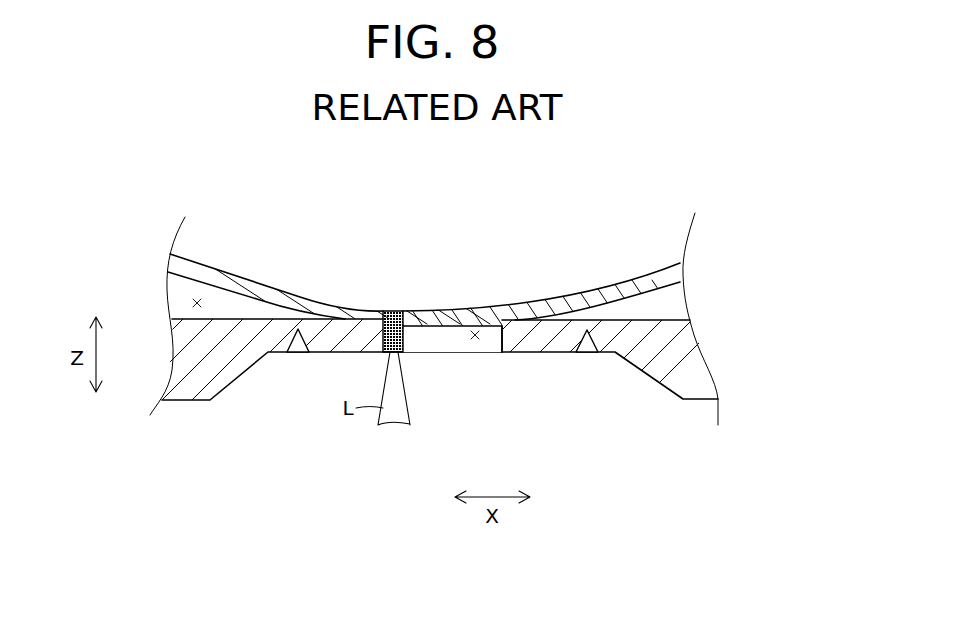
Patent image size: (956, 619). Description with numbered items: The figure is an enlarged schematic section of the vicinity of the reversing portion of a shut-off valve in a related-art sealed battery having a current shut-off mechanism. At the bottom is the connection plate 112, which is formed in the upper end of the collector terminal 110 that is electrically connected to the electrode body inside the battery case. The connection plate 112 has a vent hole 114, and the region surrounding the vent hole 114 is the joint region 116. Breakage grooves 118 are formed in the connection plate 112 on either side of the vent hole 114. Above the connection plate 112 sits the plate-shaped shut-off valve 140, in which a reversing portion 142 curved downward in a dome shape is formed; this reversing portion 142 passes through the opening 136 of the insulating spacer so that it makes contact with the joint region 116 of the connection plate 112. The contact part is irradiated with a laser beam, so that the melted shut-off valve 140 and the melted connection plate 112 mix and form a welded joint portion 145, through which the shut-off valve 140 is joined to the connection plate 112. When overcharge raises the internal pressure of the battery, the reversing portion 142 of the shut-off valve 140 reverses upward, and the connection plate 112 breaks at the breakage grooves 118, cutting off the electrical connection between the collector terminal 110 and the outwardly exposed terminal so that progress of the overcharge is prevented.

The collector terminal 110 is at (433, 361).
The connection plate 112 is at (663, 378).
The vent hole 114 is at (475, 341).
The joint region 116 is at (503, 353).
The breakage groove 118 is at (293, 345).
The opening 136 is at (197, 308).
The shut-off valve 140 is at (421, 278).
The reversing portion 142 is at (606, 292).
The welded joint portion 145 is at (405, 353).